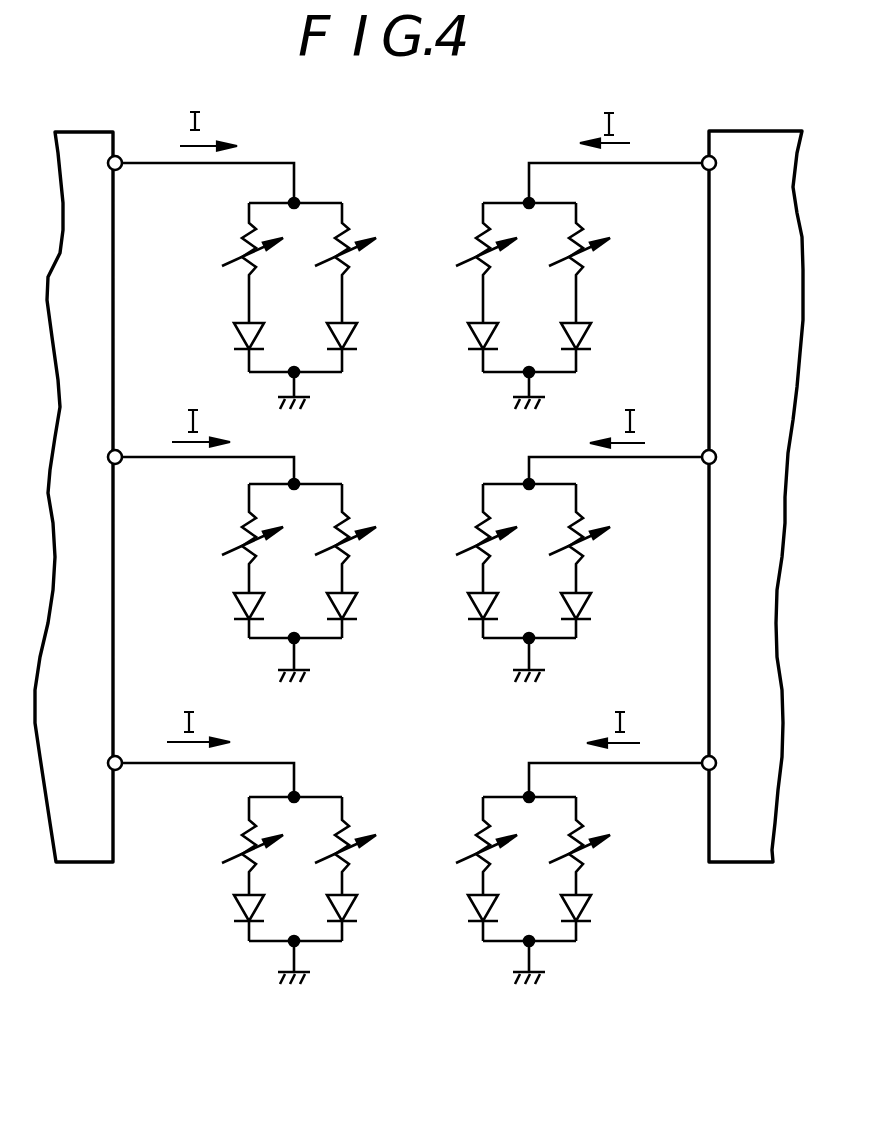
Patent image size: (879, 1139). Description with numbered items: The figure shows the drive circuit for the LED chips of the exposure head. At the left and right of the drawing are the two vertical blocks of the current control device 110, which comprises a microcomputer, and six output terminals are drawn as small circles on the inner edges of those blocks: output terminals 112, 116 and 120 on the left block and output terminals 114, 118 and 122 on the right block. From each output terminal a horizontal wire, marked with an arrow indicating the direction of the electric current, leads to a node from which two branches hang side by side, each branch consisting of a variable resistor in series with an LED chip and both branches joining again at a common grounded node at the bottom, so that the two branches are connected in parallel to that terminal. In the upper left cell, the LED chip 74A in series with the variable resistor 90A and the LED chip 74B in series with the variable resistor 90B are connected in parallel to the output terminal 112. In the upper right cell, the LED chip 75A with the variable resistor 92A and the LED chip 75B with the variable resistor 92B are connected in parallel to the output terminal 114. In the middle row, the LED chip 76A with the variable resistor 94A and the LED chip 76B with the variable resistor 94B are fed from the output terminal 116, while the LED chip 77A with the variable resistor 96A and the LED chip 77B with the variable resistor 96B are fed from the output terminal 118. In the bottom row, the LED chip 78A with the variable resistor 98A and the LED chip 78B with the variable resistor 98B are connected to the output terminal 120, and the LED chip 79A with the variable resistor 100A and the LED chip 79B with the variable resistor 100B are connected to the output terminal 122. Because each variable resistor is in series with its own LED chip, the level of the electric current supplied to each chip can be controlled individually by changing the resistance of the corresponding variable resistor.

The current control device 110 is at (93, 160).
The output terminal 112 is at (121, 156).
The output terminal 114 is at (716, 170).
The output terminal 116 is at (109, 450).
The output terminal 118 is at (714, 463).
The output terminal 120 is at (109, 757).
The output terminal 122 is at (713, 754).
The variable resistor 90A is at (242, 248).
The variable resistor 90B is at (348, 250).
The variable resistor 92A is at (482, 242).
The variable resistor 92B is at (582, 250).
The variable resistor 94A is at (242, 536).
The variable resistor 94B is at (343, 530).
The variable resistor 96A is at (482, 538).
The variable resistor 96B is at (583, 513).
The variable resistor 98A is at (242, 836).
The variable resistor 98B is at (347, 828).
The variable resistor 100A is at (482, 848).
The variable resistor 100B is at (586, 852).
The LED chip 74A is at (238, 332).
The LED chip 74B is at (350, 338).
The LED chip 75A is at (480, 343).
The LED chip 75B is at (588, 338).
The LED chip 76A is at (238, 608).
The LED chip 76B is at (347, 616).
The LED chip 77A is at (480, 610).
The LED chip 77B is at (592, 614).
The LED chip 78A is at (237, 908).
The LED chip 78B is at (347, 922).
The LED chip 79A is at (472, 900).
The LED chip 79B is at (587, 903).